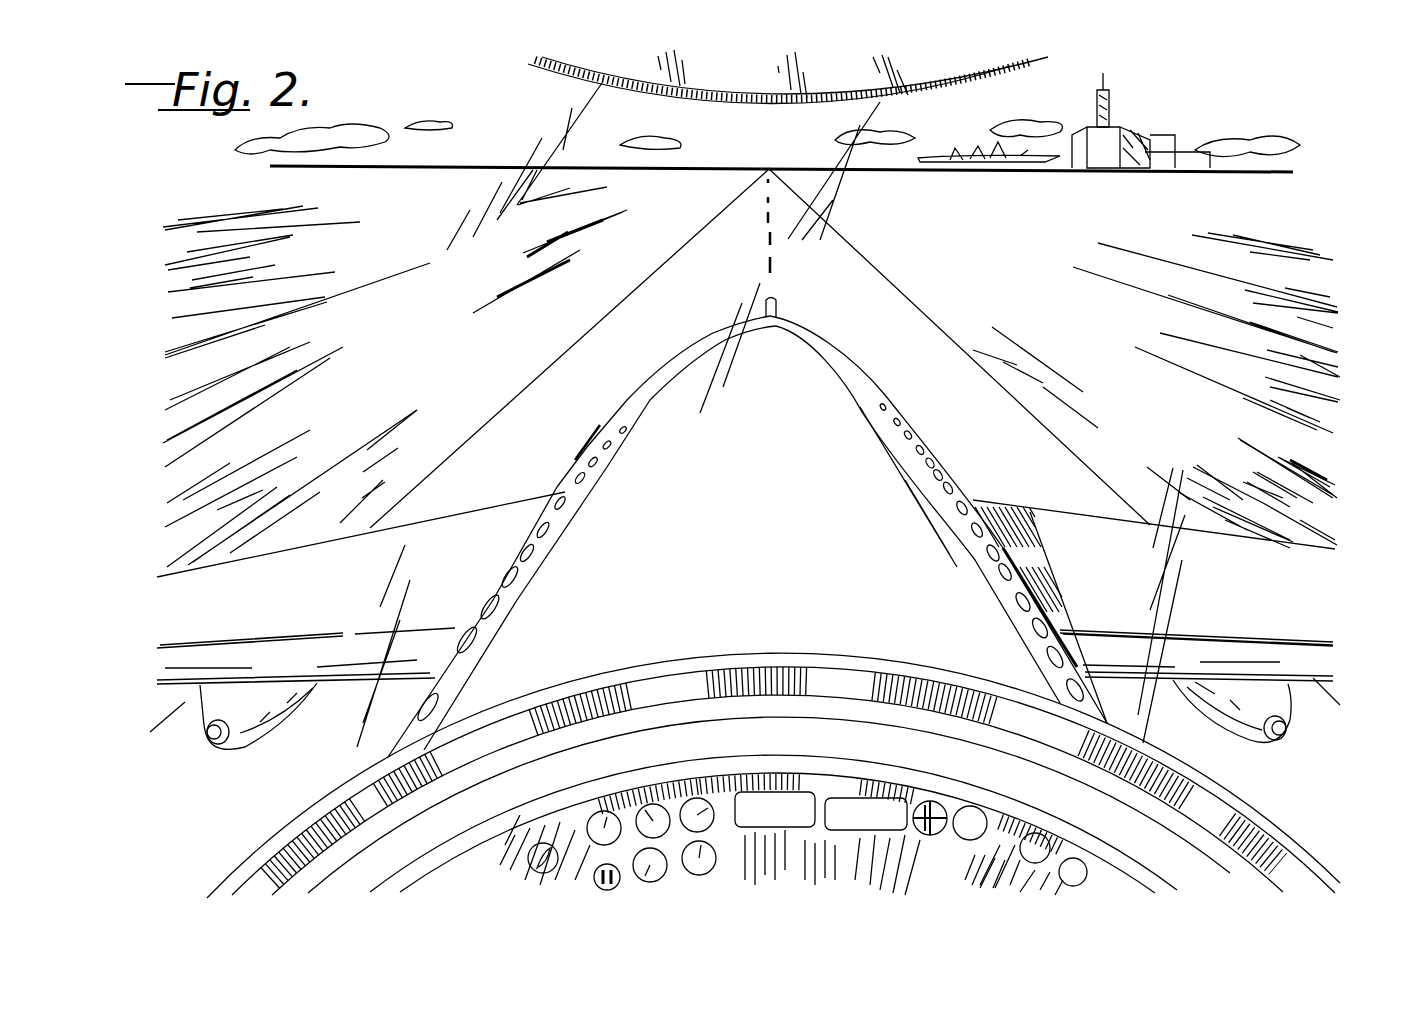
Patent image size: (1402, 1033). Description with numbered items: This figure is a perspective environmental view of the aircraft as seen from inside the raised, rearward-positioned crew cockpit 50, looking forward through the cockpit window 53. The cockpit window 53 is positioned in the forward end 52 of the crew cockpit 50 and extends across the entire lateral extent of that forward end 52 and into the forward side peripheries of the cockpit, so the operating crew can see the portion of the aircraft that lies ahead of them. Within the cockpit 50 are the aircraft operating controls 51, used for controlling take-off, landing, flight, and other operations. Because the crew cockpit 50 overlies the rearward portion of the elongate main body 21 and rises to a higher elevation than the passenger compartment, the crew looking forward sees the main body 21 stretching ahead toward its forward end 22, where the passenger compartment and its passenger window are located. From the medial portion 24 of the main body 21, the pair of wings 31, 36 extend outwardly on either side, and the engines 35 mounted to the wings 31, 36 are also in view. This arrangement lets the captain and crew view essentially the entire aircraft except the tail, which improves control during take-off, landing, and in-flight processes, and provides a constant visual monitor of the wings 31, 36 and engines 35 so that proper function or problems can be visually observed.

The main body 21 is at (598, 447).
The forward end 22 is at (772, 411).
The medial portion 24 is at (777, 604).
The wing 31 is at (338, 600).
The engines 35 is at (266, 713).
The wing 36 is at (1160, 590).
The crew cockpit 50 is at (1213, 625).
The aircraft operating controls 51 is at (756, 881).
The forward end 52 is at (940, 761).
The cockpit window 53 is at (1022, 230).